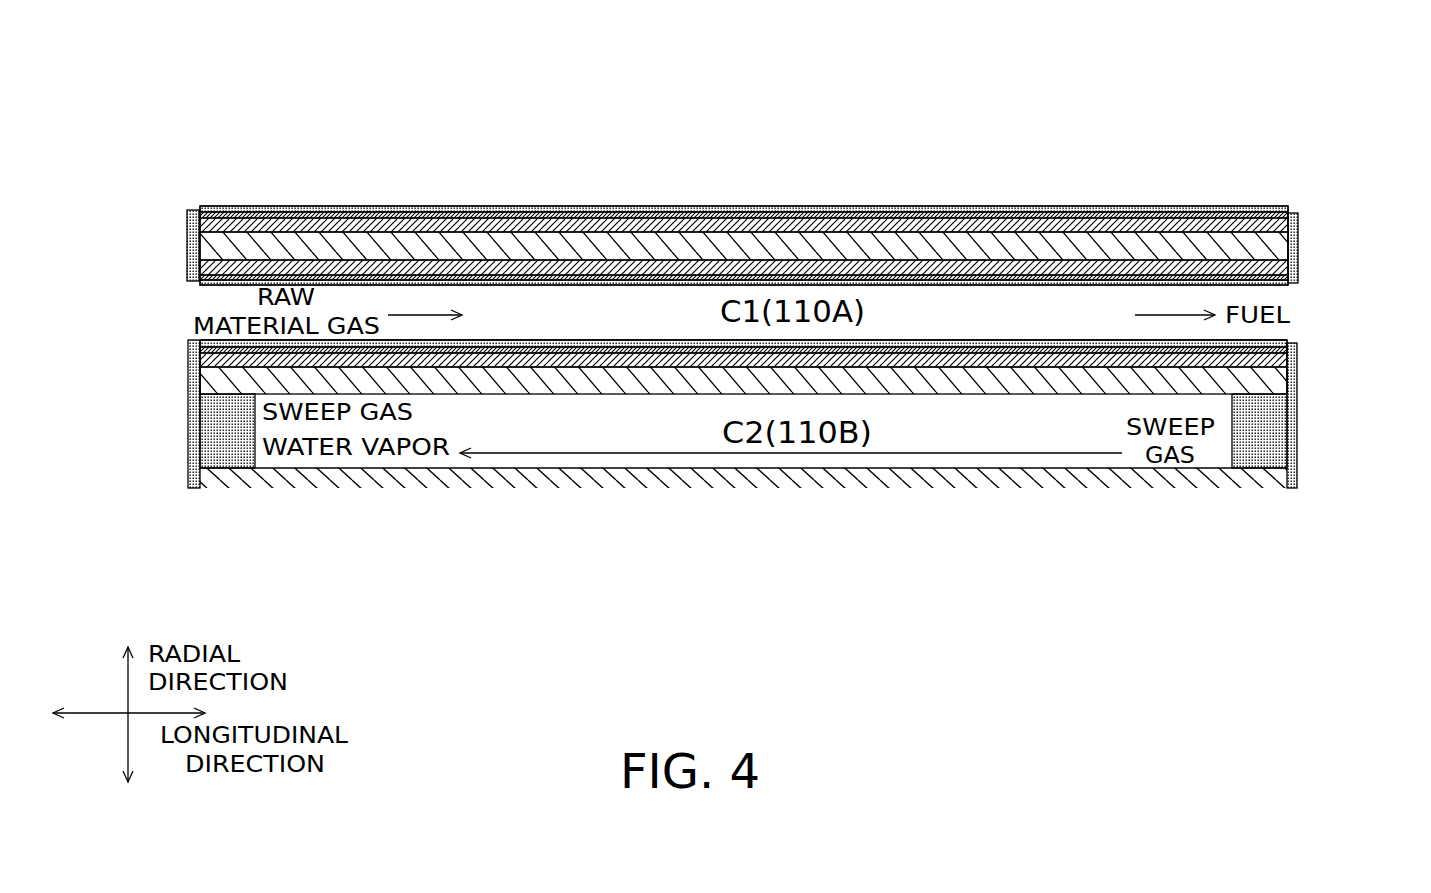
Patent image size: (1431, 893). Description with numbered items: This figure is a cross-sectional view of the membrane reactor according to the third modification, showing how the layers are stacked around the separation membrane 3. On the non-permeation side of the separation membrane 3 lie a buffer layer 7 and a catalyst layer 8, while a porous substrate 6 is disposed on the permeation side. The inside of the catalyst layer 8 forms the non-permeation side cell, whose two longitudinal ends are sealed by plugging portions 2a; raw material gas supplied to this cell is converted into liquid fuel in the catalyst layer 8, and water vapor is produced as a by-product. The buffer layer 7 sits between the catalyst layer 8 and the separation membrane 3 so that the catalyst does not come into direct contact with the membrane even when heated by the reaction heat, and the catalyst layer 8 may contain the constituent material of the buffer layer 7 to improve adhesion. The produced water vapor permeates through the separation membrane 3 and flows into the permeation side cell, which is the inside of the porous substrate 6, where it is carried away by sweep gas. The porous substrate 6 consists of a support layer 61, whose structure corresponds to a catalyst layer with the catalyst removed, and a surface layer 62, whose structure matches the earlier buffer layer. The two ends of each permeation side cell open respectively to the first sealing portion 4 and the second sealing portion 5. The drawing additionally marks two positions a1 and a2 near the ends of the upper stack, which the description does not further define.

The plugging portion 2a is at (240, 466).
The separation membrane 3 is at (1299, 210).
The first sealing portion 4 is at (195, 490).
The second sealing portion 5 is at (1292, 490).
The porous substrate 6 is at (1383, 220).
The support layer 61 is at (1299, 247).
The surface layer 62 is at (1299, 226).
The buffer layer 7 is at (193, 208).
The catalyst layer 8 is at (240, 207).
The gas inflow point a1 is at (206, 298).
The gas outflow point a2 is at (1281, 302).